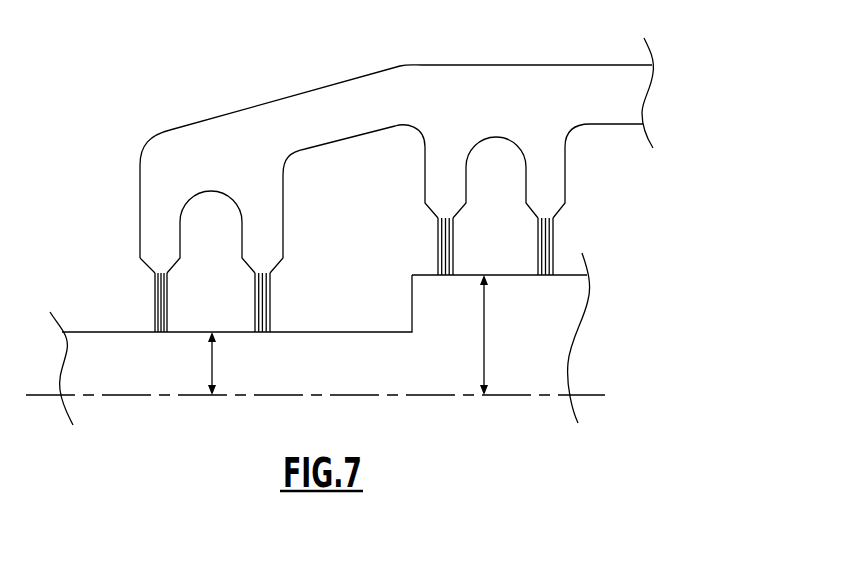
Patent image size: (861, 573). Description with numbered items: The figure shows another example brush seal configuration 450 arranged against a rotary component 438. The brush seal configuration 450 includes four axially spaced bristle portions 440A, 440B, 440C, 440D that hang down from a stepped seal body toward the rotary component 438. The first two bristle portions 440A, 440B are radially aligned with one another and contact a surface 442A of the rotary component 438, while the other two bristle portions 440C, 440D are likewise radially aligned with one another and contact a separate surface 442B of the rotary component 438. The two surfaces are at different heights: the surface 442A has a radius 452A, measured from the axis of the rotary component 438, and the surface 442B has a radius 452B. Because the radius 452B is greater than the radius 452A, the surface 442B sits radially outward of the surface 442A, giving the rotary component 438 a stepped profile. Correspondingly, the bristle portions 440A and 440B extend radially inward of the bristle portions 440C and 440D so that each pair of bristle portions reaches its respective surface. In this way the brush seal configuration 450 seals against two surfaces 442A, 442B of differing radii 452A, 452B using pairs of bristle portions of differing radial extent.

The brush seal configuration 450 is at (118, 60).
The rotary component 438 is at (440, 372).
The bristle portion 440A is at (172, 313).
The bristle portion 440B is at (275, 313).
The bristle portion 440C is at (431, 249).
The bristle portion 440D is at (559, 249).
The surface 442A is at (102, 332).
The surface 442B is at (525, 230).
The radius 452A is at (212, 356).
The radius 452B is at (485, 342).